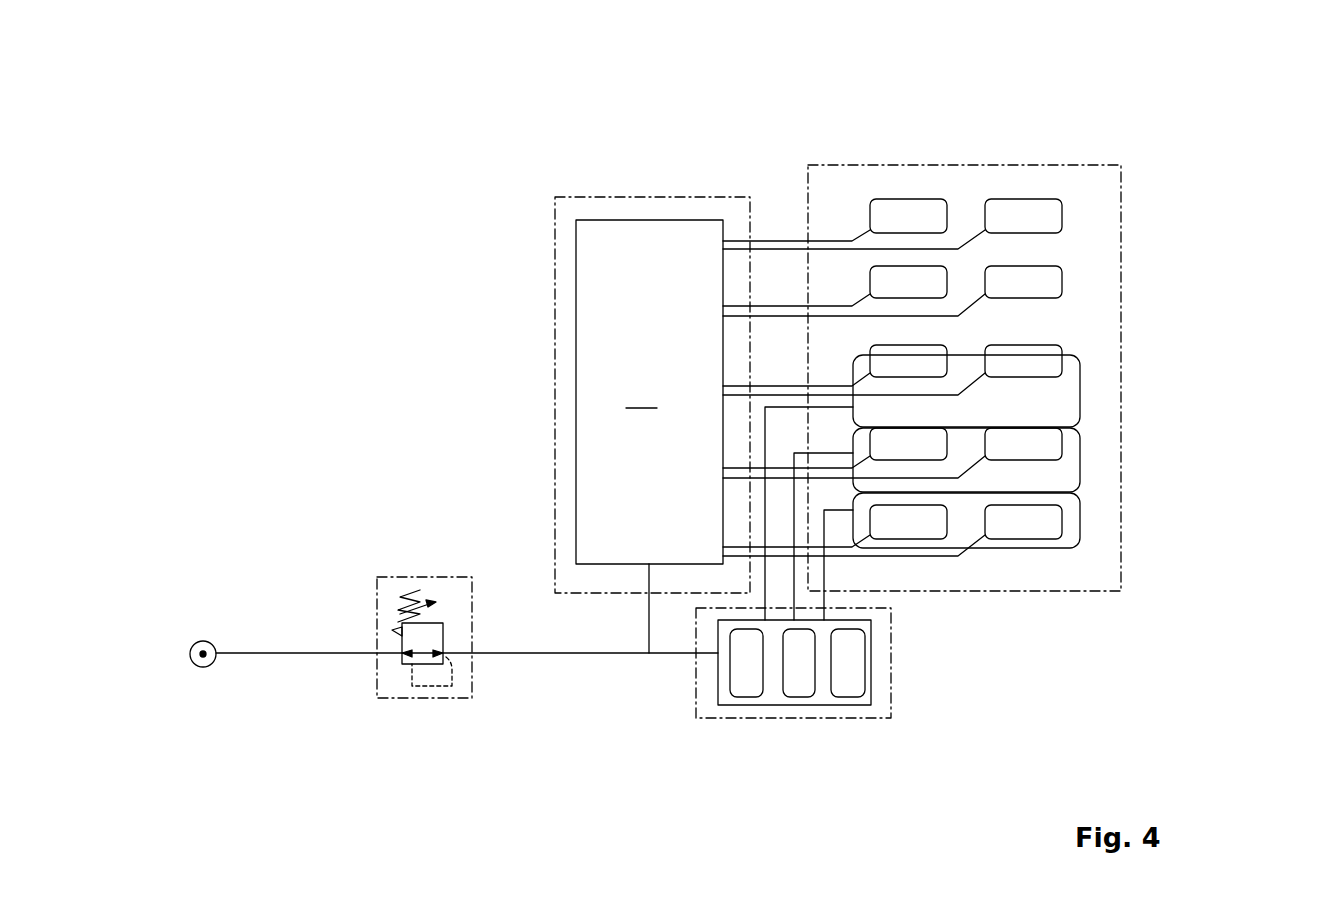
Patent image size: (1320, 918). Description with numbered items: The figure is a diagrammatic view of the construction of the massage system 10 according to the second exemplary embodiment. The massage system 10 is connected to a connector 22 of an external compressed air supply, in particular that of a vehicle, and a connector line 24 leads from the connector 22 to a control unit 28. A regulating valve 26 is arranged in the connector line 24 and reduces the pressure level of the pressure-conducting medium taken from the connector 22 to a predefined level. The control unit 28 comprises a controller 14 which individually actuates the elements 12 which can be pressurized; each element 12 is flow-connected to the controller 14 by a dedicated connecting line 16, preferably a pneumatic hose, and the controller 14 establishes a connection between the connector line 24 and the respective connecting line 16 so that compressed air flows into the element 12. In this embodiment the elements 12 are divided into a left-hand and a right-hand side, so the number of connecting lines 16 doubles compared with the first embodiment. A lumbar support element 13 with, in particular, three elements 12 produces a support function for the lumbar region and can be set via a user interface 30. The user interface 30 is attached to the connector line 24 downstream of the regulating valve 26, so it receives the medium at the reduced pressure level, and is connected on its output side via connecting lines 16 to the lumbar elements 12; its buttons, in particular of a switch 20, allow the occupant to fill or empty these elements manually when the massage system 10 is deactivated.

The massage system 10 is at (283, 288).
The elements which can be pressurized 12 is at (908, 212).
The lumbar support element 13 is at (1062, 477).
The controller 14 is at (649, 436).
The connecting line 16 is at (780, 242).
The switch 20 is at (845, 681).
The connector 22 is at (193, 662).
The connector line 24 is at (257, 653).
The regulating valve 26 is at (400, 575).
The control unit 28 is at (612, 196).
The user interface 30 is at (785, 720).